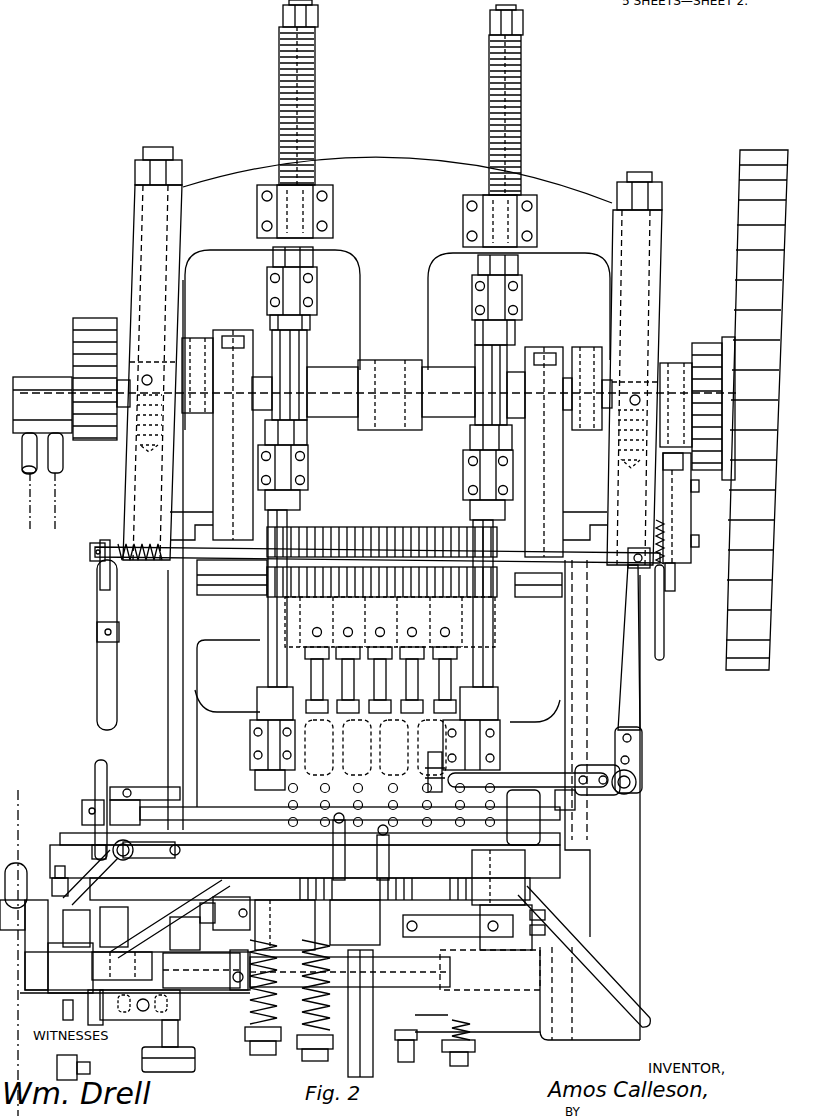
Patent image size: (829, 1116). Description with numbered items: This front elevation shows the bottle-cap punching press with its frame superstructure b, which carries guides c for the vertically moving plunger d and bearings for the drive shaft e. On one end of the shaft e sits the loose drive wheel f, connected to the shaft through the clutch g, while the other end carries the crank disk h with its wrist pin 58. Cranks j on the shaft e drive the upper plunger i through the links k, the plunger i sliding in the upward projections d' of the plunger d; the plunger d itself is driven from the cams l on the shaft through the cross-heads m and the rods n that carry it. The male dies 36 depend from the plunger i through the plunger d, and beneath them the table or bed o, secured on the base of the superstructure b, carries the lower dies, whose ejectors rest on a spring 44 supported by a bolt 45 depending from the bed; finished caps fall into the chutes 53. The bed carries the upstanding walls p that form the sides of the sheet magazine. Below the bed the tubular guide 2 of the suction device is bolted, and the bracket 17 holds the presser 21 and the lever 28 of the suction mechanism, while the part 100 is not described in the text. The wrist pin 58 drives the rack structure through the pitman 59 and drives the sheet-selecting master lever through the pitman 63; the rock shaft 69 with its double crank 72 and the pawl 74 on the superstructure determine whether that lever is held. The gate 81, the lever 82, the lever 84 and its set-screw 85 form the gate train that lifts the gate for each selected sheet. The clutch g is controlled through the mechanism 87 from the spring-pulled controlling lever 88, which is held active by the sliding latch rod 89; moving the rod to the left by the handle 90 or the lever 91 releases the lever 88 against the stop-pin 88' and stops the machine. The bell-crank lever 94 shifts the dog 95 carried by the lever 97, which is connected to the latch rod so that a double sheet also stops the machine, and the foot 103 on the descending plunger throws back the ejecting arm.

The wrist pin 58 is at (20, 380).
The crank disk h is at (100, 440).
The cranks j is at (195, 345).
The links k is at (388, 443).
The drive shaft e is at (445, 417).
The cross-heads m is at (318, 292).
The cams l is at (308, 360).
The rods n is at (290, 535).
The clutch g is at (704, 345).
The drive wheel f is at (742, 670).
The clutch mechanism 87 is at (691, 522).
The controlling lever 88 is at (675, 590).
The stop-pin 88' is at (685, 589).
The latch rod 89 is at (610, 572).
The handle 90 is at (100, 572).
The lever 91 is at (97, 662).
The lever 97 is at (528, 772).
The guides c is at (183, 662).
The upward projections d' is at (377, 691).
The plunger i is at (510, 650).
The male die 36 is at (370, 645).
The dog 95 is at (430, 760).
The rock shaft 69 is at (200, 810).
The double crank 72 is at (110, 790).
The pitman 63 is at (100, 835).
The pitman 59 is at (22, 790).
The bell-crank lever 94 is at (500, 815).
The superstructure b is at (636, 825).
The set-screw 85 is at (45, 868).
The pawl 74 is at (92, 850).
The lever 84 is at (112, 860).
The chutes 53 is at (142, 938).
The foot 103 is at (172, 1072).
The spring 100 is at (315, 1010).
The tubular guide 2 is at (348, 1068).
The lever 28 is at (400, 1050).
The presser 21 is at (333, 864).
The gate 81 is at (388, 838).
The bracket 17 is at (335, 910).
The lever 82 is at (217, 830).
The upstanding walls p is at (245, 882).
The plunger d is at (516, 877).
The table or bed o is at (450, 925).
The spring 44 is at (470, 1035).
The bolt 45 is at (460, 1066).